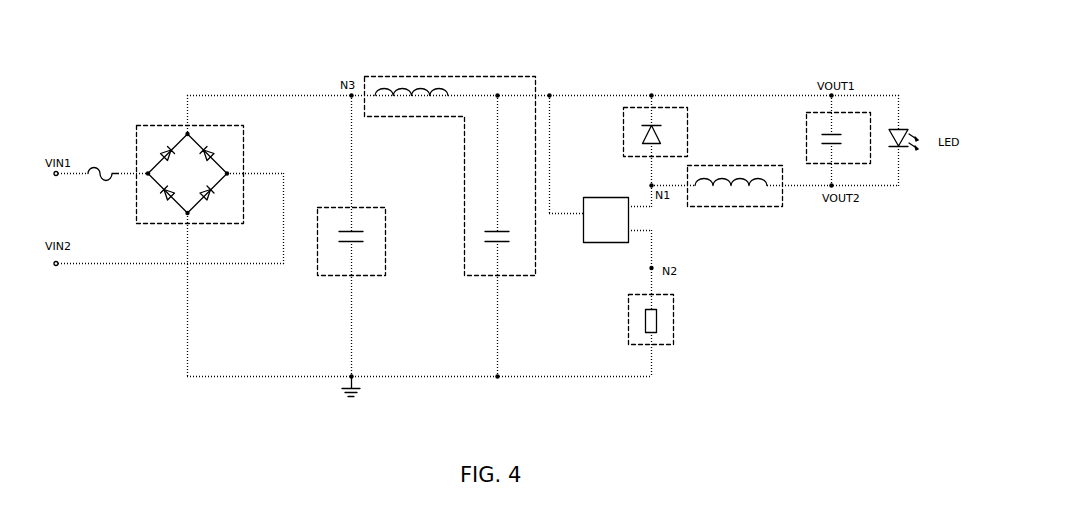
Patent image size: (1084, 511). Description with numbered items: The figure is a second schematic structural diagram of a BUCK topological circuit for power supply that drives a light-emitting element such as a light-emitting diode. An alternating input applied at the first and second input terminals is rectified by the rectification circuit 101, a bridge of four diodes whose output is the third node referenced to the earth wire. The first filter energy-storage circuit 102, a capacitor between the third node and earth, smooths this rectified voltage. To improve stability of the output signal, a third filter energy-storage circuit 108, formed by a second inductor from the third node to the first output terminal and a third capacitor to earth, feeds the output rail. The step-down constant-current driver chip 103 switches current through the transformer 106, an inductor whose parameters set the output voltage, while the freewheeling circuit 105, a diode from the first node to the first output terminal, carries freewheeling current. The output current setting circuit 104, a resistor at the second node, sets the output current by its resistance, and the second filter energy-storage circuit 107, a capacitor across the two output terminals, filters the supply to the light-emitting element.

The rectification circuit 101 is at (243, 155).
The first filter energy-storage circuit 102 is at (385, 240).
The step-down constant-current driver chip 103 is at (595, 197).
The output current setting circuit 104 is at (673, 320).
The freewheeling circuit 105 is at (687, 125).
The transformer 106 is at (735, 165).
The second filter energy-storage circuit 107 is at (840, 112).
The third filter energy-storage circuit 108 is at (452, 76).